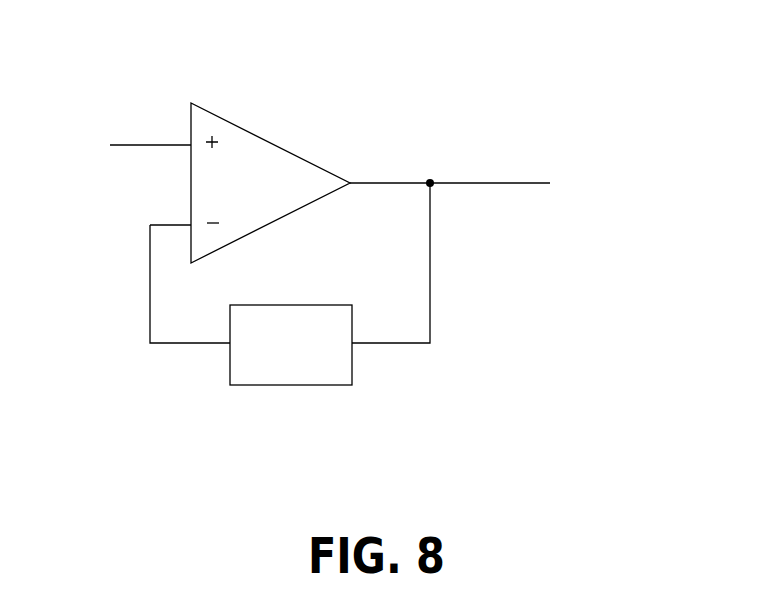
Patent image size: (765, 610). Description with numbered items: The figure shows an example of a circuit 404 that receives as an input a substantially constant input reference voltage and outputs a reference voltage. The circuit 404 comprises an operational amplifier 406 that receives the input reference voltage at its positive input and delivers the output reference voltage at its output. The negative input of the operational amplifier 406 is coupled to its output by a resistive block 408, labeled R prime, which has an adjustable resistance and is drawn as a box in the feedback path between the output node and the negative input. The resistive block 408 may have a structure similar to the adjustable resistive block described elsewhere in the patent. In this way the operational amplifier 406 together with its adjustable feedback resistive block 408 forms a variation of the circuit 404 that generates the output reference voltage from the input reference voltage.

The circuit 404 is at (583, 73).
The operational amplifier 406 is at (268, 142).
The resistive block 408 is at (322, 385).